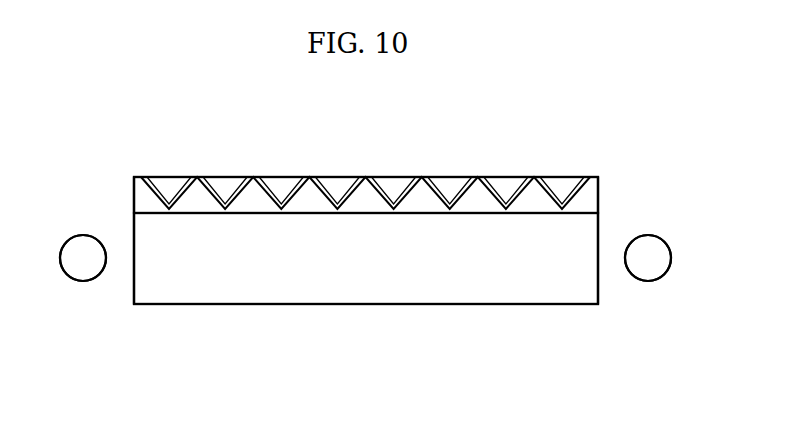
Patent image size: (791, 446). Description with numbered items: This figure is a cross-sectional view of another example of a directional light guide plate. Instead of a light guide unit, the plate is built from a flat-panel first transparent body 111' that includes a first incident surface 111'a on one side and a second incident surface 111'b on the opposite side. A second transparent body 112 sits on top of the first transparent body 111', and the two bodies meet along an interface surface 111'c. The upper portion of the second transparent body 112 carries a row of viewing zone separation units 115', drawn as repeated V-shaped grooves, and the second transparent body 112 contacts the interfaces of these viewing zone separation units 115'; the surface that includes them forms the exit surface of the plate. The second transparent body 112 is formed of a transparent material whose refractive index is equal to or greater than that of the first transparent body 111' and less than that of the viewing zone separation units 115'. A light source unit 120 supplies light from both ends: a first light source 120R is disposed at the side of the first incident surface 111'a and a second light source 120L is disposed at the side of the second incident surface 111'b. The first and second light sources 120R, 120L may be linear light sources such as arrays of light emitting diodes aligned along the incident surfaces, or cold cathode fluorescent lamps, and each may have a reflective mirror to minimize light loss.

The second transparent body 112 is at (593, 196).
The interface surface 111'c is at (409, 206).
The viewing zone separation units 115' is at (365, 165).
The first transparent body 111' is at (366, 287).
The first incident surface 111'a is at (112, 263).
The second incident surface 111'b is at (619, 263).
The light source unit 120 is at (53, 335).
The first light source 120R is at (78, 279).
The second light source 120L is at (653, 279).